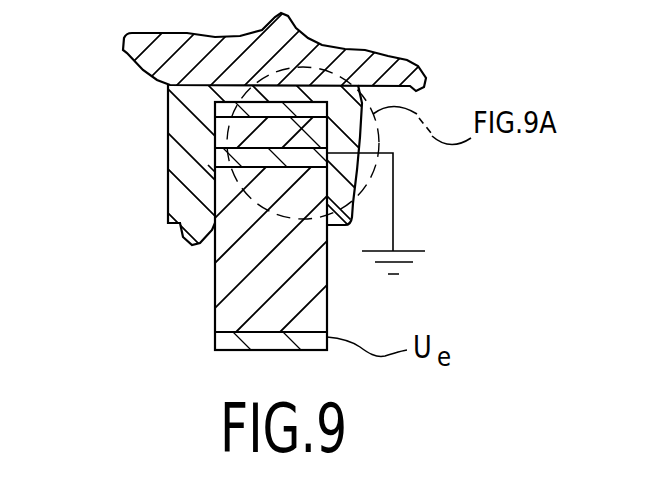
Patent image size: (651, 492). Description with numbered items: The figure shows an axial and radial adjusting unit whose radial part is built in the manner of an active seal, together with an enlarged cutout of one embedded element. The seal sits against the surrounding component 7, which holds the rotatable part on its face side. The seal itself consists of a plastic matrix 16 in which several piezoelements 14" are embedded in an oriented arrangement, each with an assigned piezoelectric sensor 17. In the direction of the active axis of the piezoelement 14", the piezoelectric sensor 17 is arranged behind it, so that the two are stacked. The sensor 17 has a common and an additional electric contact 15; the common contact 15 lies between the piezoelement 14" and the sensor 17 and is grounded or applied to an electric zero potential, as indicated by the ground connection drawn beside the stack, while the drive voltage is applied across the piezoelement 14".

The surrounding component 7 is at (128, 48).
The piezoelement 14 is at (360, 294).
The electric contact 15 is at (227, 339).
The plastic matrix 16 is at (178, 218).
The piezoelectric sensor 17 is at (203, 128).